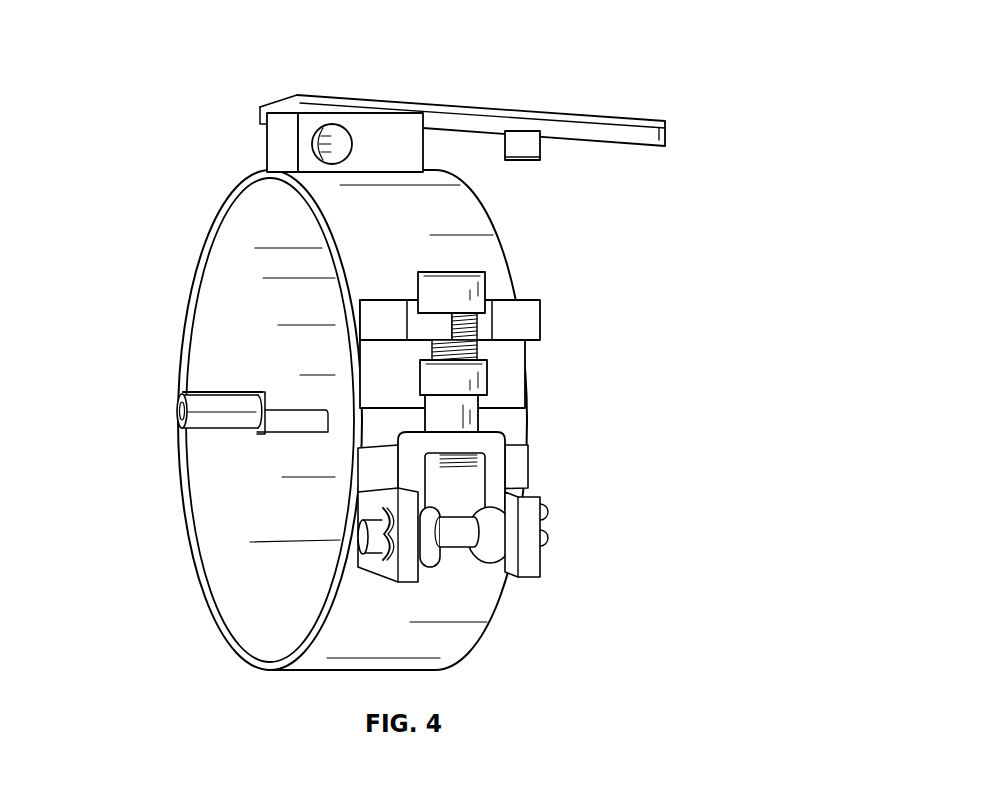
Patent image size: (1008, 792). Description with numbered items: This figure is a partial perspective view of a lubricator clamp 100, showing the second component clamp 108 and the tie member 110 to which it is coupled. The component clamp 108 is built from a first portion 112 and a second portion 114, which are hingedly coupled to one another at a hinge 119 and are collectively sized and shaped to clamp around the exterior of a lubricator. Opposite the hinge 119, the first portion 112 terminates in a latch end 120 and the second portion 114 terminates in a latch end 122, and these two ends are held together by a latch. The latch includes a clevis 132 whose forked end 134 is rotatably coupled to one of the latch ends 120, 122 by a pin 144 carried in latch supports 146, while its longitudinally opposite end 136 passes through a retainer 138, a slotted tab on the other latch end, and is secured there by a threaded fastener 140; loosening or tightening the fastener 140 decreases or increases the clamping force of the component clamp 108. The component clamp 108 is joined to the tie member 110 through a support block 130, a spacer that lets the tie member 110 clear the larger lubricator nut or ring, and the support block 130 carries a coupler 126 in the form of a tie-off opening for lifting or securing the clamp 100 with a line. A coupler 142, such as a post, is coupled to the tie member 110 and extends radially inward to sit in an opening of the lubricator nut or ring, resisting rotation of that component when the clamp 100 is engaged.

The lubricator clamp 100 is at (722, 43).
The second component clamp 108 is at (231, 184).
The tie member 110 is at (650, 120).
The first portion 112 is at (199, 292).
The second portion 114 is at (203, 565).
The hinge 119 is at (178, 416).
The latch end 120 is at (530, 403).
The latch end 122 is at (530, 477).
The coupler 126 is at (333, 124).
The support block 130 is at (425, 153).
The clevis 132 is at (512, 438).
The forked end 134 is at (492, 565).
The end 136 is at (530, 378).
The retainer 138 is at (543, 317).
The fastener 140 is at (488, 288).
The coupler 142 is at (545, 154).
The pin 144 is at (358, 537).
The latch support 146 is at (407, 582).